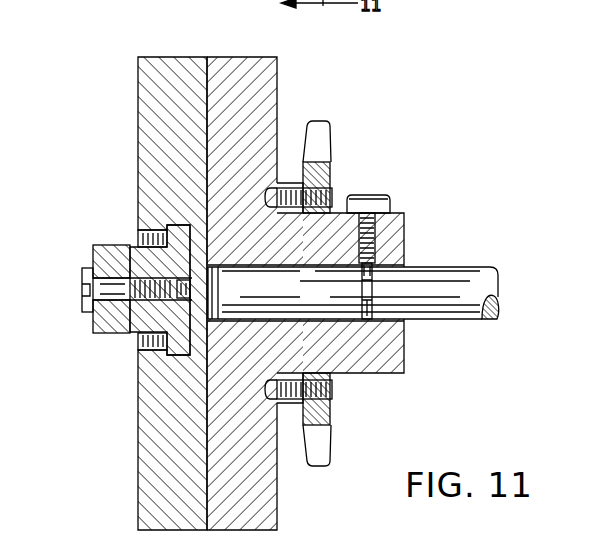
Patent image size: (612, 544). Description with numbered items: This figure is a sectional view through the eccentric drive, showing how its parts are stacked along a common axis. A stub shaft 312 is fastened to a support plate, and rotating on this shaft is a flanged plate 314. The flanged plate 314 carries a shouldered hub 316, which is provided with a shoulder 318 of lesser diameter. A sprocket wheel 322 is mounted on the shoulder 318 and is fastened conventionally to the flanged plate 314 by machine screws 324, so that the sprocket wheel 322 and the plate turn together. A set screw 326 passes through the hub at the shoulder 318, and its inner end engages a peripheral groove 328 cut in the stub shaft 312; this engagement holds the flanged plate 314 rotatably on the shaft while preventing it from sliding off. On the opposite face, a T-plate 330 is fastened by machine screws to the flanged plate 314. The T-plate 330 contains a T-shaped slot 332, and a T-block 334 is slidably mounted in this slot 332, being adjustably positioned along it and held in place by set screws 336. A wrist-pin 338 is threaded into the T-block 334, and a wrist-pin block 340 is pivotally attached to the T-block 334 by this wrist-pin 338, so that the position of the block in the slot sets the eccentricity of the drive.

The stub shaft 312 is at (463, 302).
The flanged plate 314 is at (258, 57).
The shouldered hub 316 is at (290, 183).
The shoulder 318 is at (400, 215).
The sprocket wheel 322 is at (324, 127).
The machine screws 324 is at (398, 212).
The set screw 326 is at (372, 252).
The peripheral groove 328 is at (366, 300).
The T-plate 330 is at (177, 57).
The T-shaped slot 332 is at (136, 288).
The T-block 334 is at (152, 318).
The set screws 336 is at (140, 231).
The wrist-pin 338 is at (88, 313).
The wrist-pin block 340 is at (100, 258).